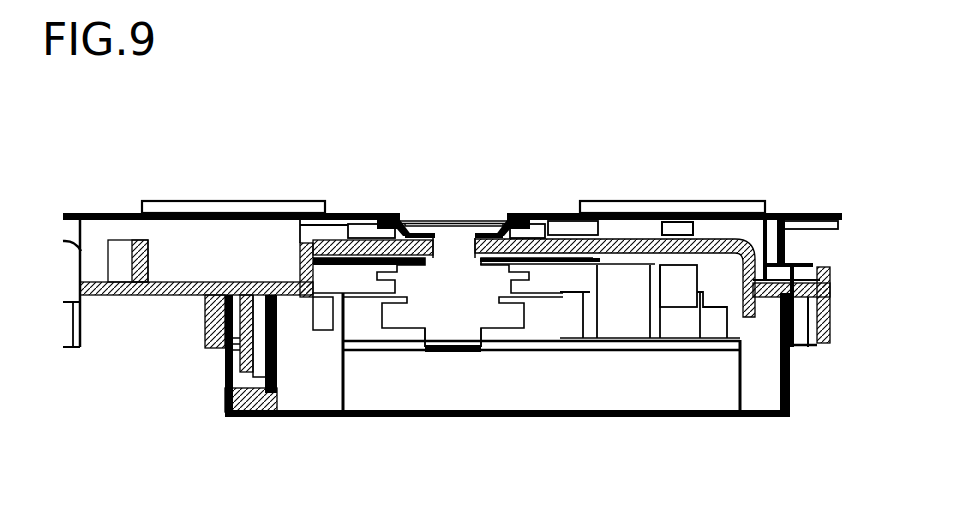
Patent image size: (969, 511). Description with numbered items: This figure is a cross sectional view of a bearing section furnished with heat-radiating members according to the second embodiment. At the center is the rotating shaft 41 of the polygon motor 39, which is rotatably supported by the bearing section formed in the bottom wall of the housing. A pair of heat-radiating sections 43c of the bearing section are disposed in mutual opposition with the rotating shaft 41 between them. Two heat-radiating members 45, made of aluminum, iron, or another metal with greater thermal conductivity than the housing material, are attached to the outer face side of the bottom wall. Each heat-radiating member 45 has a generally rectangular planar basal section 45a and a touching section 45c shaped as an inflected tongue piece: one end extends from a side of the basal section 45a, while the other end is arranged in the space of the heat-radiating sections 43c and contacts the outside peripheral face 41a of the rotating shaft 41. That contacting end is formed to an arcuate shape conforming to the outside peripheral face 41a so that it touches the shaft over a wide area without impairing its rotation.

The heat-radiating member 45 is at (106, 207).
The basal section 45a is at (241, 213).
The touching section 45c is at (413, 230).
The heat-radiating section 43c is at (428, 232).
The rotating shaft 41 is at (457, 242).
The outside peripheral face 41a is at (463, 253).
The polygon motor 39 is at (408, 317).